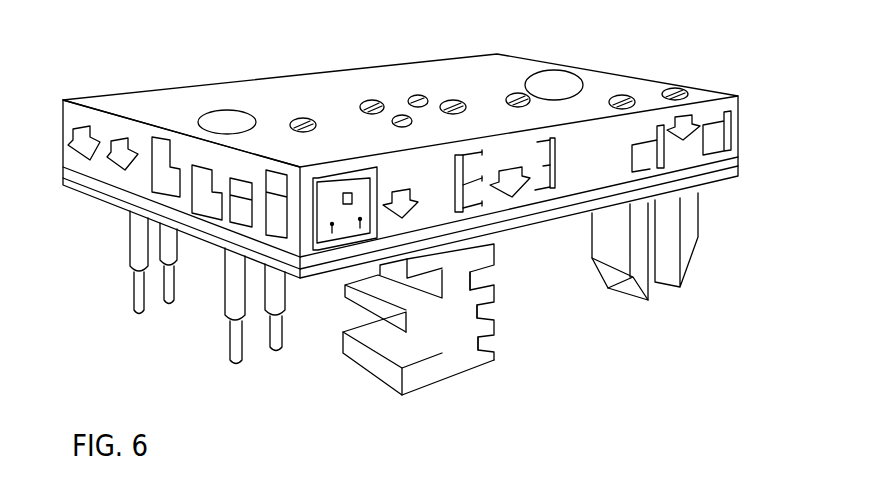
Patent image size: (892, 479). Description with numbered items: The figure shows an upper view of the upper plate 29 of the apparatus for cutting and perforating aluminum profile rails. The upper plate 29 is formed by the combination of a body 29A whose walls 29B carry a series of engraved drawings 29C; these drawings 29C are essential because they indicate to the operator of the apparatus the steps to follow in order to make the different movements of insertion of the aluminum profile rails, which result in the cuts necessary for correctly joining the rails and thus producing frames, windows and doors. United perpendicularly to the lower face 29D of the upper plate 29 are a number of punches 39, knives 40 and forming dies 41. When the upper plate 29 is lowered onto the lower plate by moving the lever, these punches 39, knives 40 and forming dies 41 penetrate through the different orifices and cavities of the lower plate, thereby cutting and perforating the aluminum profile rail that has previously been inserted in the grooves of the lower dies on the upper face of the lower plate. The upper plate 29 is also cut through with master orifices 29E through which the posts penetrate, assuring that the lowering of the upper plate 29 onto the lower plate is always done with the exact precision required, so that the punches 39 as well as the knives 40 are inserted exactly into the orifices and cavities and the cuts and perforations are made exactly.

The upper plate 29 is at (503, 76).
The body 29A is at (716, 82).
The walls 29B is at (594, 155).
The drawings 29C is at (152, 138).
The lower face 29D is at (337, 284).
The master orifices 29E is at (232, 127).
The punches 39 is at (133, 246).
The knives 40 is at (633, 277).
The forming dies 41 is at (457, 367).